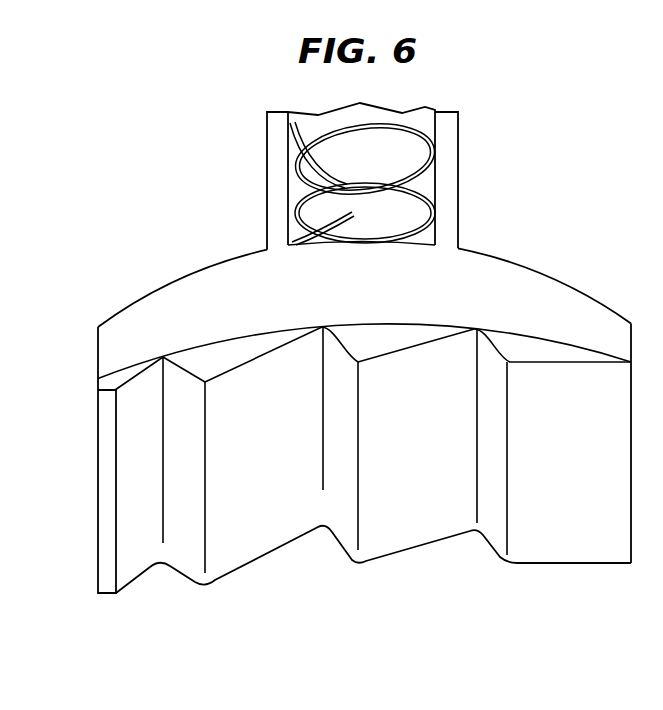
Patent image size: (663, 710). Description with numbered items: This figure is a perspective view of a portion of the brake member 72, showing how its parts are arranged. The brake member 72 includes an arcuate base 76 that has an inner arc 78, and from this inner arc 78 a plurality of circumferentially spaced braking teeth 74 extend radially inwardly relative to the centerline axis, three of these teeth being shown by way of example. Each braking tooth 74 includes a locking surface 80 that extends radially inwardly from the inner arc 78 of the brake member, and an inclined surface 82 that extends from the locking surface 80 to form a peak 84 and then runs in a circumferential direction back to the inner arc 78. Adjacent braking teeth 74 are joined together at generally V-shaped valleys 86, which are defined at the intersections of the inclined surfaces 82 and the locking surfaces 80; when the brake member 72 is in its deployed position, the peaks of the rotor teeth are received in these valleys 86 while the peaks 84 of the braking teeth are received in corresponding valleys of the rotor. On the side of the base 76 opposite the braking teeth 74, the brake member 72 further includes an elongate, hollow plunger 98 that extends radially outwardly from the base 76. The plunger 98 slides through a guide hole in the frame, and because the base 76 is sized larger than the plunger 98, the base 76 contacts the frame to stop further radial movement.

The brake member 72 is at (516, 267).
The braking tooth 74 is at (432, 542).
The arcuate base 76 is at (97, 352).
The inner arc 78 is at (253, 330).
The locking surface 80 is at (180, 510).
The inclined surface 82 is at (262, 523).
The peak 84 is at (185, 573).
The V-shaped valley 86 is at (322, 490).
The plunger 98 is at (458, 184).